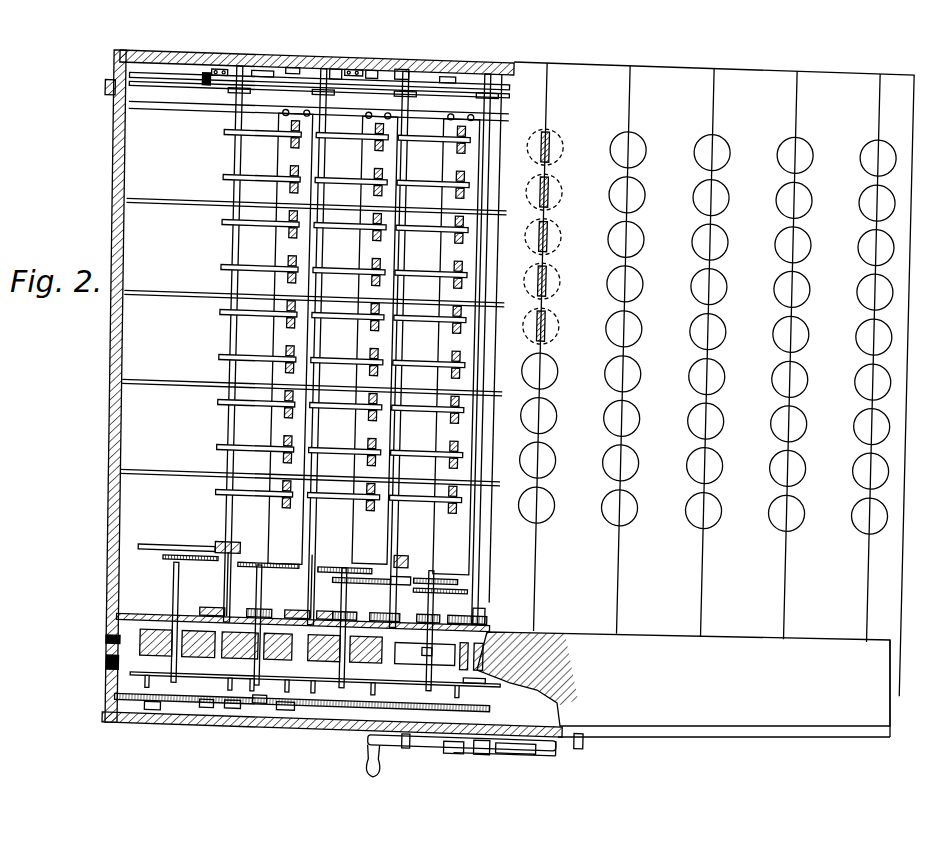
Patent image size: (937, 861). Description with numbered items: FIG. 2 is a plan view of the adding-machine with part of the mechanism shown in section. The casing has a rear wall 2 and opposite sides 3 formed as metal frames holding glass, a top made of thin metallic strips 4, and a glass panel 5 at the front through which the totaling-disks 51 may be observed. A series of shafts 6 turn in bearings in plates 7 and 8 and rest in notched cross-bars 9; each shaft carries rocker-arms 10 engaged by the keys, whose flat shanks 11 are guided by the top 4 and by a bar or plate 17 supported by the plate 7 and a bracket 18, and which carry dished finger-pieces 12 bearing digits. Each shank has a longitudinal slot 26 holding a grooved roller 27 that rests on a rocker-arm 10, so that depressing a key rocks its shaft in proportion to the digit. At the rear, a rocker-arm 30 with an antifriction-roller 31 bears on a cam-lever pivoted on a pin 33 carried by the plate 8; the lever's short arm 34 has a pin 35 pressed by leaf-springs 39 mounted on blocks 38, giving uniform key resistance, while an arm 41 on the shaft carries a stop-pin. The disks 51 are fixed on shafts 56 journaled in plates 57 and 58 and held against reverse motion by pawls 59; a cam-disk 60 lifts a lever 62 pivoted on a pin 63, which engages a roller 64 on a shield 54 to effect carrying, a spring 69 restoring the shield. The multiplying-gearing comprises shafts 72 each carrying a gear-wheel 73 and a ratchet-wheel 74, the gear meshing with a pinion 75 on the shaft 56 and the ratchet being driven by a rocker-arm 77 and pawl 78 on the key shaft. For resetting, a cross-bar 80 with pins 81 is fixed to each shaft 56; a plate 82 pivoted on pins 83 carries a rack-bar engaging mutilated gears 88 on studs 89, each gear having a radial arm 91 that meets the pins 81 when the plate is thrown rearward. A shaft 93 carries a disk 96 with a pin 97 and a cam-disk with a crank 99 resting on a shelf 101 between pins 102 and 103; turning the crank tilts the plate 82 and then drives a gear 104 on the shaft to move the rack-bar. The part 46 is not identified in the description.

The rear wall 2 is at (290, 55).
The opposite sides 3 is at (114, 488).
The thin metallic strips 4 is at (698, 52).
The glass panel 5 is at (683, 684).
The shafts 6 is at (236, 424).
The plate 7 is at (226, 546).
The plate 8 is at (190, 56).
The cross-bars 9 is at (196, 200).
The rocker-arms 10 is at (266, 312).
The shanks 11 is at (556, 260).
The finger-piece 12 is at (732, 208).
The bar or plate 17 is at (278, 410).
The bracket 18 is at (190, 110).
The longitudinal slot 26 is at (456, 140).
The grooved roller 27 is at (292, 140).
The rocker-arm 30 is at (250, 88).
The antifriction-roller 31 is at (236, 90).
The pin 33 is at (336, 62).
The short arm 34 is at (336, 86).
The pin 35 is at (372, 62).
The blocks 38 is at (220, 66).
The leaf-springs 39 is at (262, 66).
The arm 41 is at (204, 82).
The rod 46 is at (200, 78).
The totaling-disks 51 is at (165, 630).
The shields 54 is at (425, 654).
The shaft 56 is at (190, 600).
The plate 57 is at (124, 668).
The plate 58 is at (150, 614).
The pawl 59 is at (252, 704).
The cam-disk 60 is at (212, 630).
The lever 62 is at (413, 606).
The pin 63 is at (466, 606).
The roller 64 is at (500, 600).
The spring 69 is at (160, 674).
The shafts 72 is at (238, 570).
The gear-wheel 73 is at (226, 608).
The ratchet-wheel 74 is at (175, 555).
The pinion 75 is at (272, 606).
The rocker-arm 77 is at (244, 536).
The pawl 78 is at (418, 570).
The cross-bar 80 is at (172, 708).
The pins 81 is at (228, 704).
The plate 82 is at (277, 700).
The pins 83 is at (125, 712).
The mutilated gears 88 is at (212, 700).
The studs 89 is at (302, 704).
The radially-disposed arm 91 is at (230, 680).
The shaft 93 is at (530, 742).
The disk 96 is at (504, 742).
The pin 97 is at (478, 742).
The crank 99 is at (400, 745).
The shelf 101 is at (572, 740).
The pin 102 is at (425, 745).
The pin 103 is at (600, 728).
The gear 104 is at (490, 670).